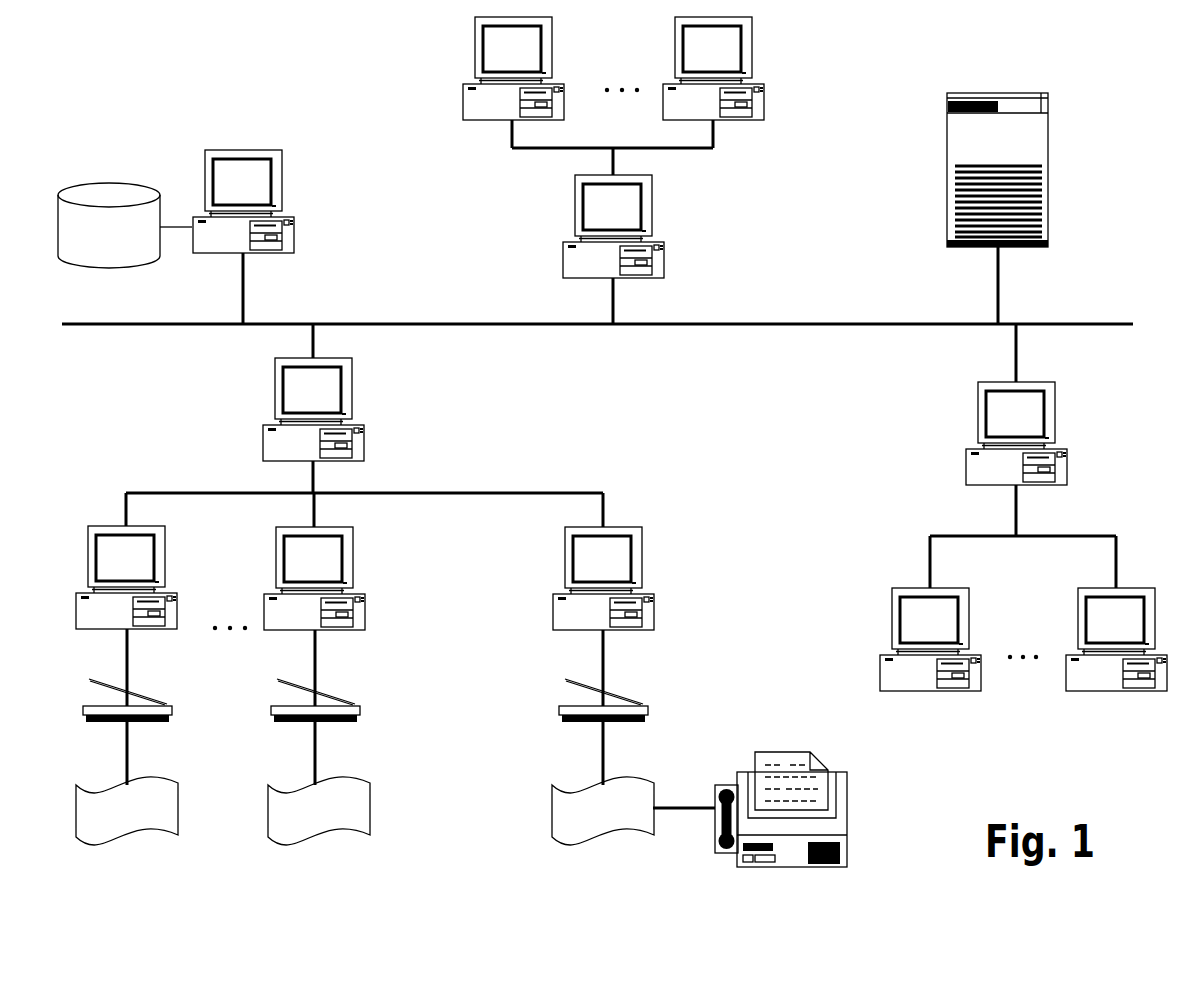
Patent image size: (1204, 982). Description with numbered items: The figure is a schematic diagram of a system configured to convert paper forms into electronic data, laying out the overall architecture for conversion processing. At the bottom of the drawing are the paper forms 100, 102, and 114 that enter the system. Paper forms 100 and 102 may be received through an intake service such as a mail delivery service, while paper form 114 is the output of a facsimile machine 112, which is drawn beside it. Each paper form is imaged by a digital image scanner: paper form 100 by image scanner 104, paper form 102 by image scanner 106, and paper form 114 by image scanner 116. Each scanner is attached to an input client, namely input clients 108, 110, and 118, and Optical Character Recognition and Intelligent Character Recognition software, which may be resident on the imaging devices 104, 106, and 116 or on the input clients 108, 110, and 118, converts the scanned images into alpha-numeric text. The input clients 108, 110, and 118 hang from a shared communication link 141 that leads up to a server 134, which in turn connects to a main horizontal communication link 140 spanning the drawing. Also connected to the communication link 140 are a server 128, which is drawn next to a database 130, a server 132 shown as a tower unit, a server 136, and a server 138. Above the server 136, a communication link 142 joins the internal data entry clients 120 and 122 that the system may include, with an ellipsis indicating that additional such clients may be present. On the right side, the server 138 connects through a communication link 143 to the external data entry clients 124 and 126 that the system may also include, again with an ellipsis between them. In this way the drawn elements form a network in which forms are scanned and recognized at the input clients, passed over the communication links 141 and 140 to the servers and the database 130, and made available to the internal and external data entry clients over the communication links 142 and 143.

The paper form 100 is at (115, 803).
The paper form 102 is at (311, 803).
The image scanner 104 is at (112, 720).
The image scanner 106 is at (303, 720).
The input client 108 is at (111, 608).
The input client 110 is at (298, 611).
The facsimile machine 112 is at (750, 793).
The paper form 114 is at (585, 803).
The image scanner 116 is at (582, 720).
The input client 118 is at (584, 614).
The internal data entry client 120 is at (496, 82).
The internal data entry client 122 is at (731, 82).
The external data entry client 124 is at (930, 657).
The external data entry client 126 is at (1116, 660).
The server 128 is at (243, 220).
The database 130 is at (125, 212).
The server 132 is at (997, 194).
The server 134 is at (297, 408).
The server 136 is at (587, 249).
The server 138 is at (991, 430).
The communication link 140 is at (597, 309).
The communication link 141 is at (364, 496).
The communication link 142 is at (612, 150).
The communication link 143 is at (1023, 549).